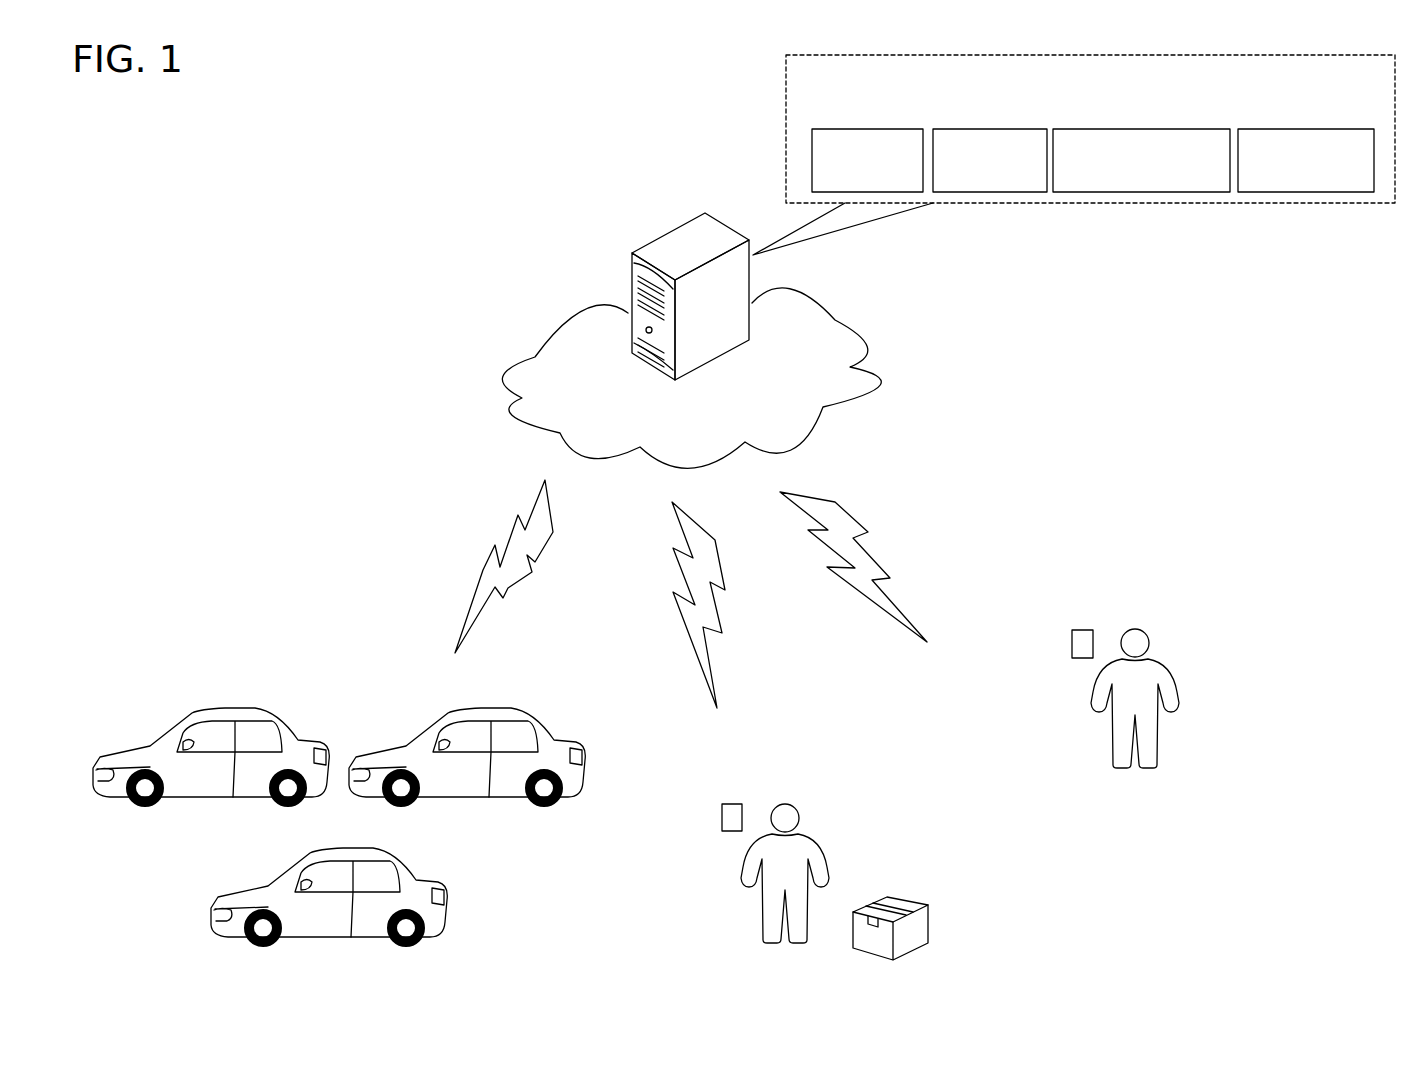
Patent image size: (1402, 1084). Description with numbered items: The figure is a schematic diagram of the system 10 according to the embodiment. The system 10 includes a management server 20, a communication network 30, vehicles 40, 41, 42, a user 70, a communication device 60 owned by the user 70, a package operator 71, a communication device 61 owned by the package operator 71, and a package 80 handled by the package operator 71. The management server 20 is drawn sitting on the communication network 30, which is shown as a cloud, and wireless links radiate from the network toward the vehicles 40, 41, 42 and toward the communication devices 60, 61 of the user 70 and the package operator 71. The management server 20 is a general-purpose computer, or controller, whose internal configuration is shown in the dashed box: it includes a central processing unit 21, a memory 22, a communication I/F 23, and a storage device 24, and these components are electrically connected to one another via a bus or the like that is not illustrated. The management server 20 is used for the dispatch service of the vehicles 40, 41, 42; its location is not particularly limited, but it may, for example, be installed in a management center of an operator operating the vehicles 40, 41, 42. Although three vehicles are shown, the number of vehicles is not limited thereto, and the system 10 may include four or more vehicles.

The system 10 is at (943, 296).
The management server 20 is at (675, 247).
The central processing unit 21 is at (872, 128).
The memory 22 is at (996, 128).
The communication I/F 23 is at (1146, 128).
The storage device 24 is at (1308, 128).
The communication network 30 is at (855, 325).
The vehicle 40 is at (157, 727).
The vehicle 41 is at (413, 727).
The vehicle 42 is at (275, 867).
The communication device 60 is at (1088, 628).
The communication device 61 is at (736, 803).
The user 70 is at (1160, 654).
The package operator 71 is at (808, 828).
The package 80 is at (918, 927).